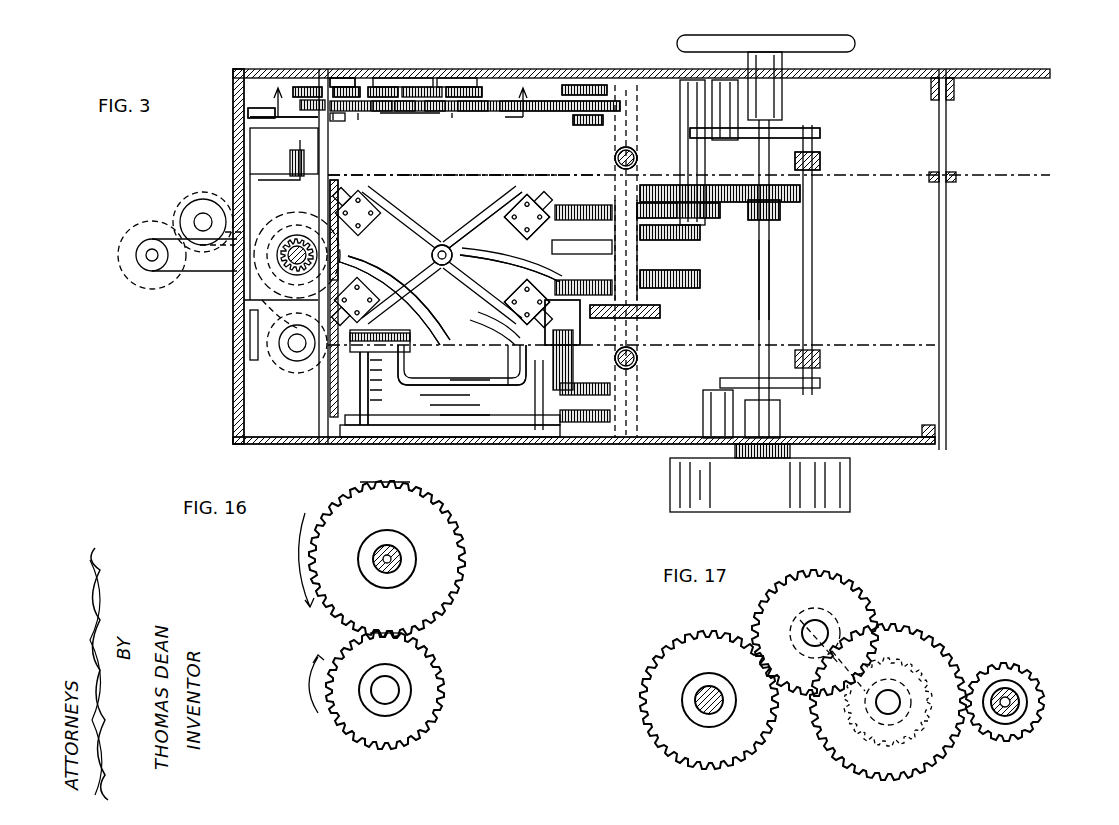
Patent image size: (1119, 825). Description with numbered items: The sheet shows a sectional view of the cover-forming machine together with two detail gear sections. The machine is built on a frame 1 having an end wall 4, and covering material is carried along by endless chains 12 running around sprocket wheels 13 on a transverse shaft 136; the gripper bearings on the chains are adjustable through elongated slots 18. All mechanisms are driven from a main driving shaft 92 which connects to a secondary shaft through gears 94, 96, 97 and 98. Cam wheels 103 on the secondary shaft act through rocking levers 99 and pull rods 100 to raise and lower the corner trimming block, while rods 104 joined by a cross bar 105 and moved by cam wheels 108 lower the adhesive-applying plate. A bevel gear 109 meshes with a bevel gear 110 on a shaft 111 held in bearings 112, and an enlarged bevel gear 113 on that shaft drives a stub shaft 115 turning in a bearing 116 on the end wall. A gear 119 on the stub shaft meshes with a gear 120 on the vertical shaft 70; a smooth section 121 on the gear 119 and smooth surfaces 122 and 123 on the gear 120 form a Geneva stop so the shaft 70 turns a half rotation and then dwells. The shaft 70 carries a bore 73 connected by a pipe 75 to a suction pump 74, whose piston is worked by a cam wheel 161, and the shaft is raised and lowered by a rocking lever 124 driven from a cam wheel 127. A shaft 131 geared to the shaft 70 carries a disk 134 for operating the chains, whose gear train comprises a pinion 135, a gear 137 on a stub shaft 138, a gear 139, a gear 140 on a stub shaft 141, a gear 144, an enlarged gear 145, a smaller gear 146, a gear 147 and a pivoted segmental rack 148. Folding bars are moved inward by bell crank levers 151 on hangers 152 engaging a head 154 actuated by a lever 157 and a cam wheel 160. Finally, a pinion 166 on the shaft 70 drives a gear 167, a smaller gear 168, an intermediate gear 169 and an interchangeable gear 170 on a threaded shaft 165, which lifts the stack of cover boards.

In FIG. 3, the frame 1 is at (562, 445).
In FIG. 3, the end wall 4 is at (235, 150).
In FIG. 3, the endless chains 12 is at (460, 172).
In FIG. 3, the sprocket wheels 13 is at (330, 172).
In FIG. 3, the elongated slots 18 is at (400, 98).
In FIG. 3, the shaft 70 is at (315, 250).
In FIG. 16, the shaft 70 is at (400, 553).
In FIG. 17, the shaft 70 is at (1018, 713).
In FIG. 3, the bore 73 is at (297, 250).
In FIG. 16, the bore 73 is at (382, 556).
In FIG. 17, the bore 73 is at (1015, 702).
In FIG. 3, the suction pump 74 is at (498, 325).
In FIG. 3, the pipe 75 is at (422, 320).
In FIG. 3, the main driving shaft 92 is at (770, 277).
In FIG. 3, the gear 94 is at (782, 210).
In FIG. 3, the gear 96 is at (720, 185).
In FIG. 3, the gear 97 is at (720, 218).
In FIG. 3, the gear 98 is at (650, 218).
In FIG. 3, the rocking levers 99 is at (790, 128).
In FIG. 3, the pull rods 100 is at (820, 160).
In FIG. 3, the cam wheels 103 is at (590, 125).
In FIG. 3, the rods 104 is at (638, 158).
In FIG. 3, the cross bar 105 is at (615, 233).
In FIG. 3, the cam wheels 108 is at (585, 85).
In FIG. 3, the bevel gear 109 is at (660, 312).
In FIG. 3, the bevel gear 110 is at (638, 358).
In FIG. 3, the shaft 111 is at (455, 348).
In FIG. 3, the bearings 112 is at (562, 330).
In FIG. 3, the enlarged bevel gear 113 is at (368, 404).
In FIG. 3, the stub shaft 115 is at (294, 346).
In FIG. 16, the stub shaft 115 is at (396, 682).
In FIG. 3, the bearing 116 is at (255, 355).
In FIG. 3, the gear 119 is at (292, 375).
In FIG. 16, the gear 119 is at (430, 691).
In FIG. 3, the gear 120 is at (268, 295).
In FIG. 16, the gear 120 is at (447, 560).
In FIG. 16, the smooth section 121 is at (335, 652).
In FIG. 3, the smooth surface 122 is at (285, 318).
In FIG. 16, the smooth surface 122 is at (383, 633).
In FIG. 3, the smooth surface 123 is at (300, 240).
In FIG. 16, the smooth surface 123 is at (387, 482).
In FIG. 3, the rocking lever 124 is at (390, 258).
In FIG. 3, the cam wheel 127 is at (688, 245).
In FIG. 3, the shaft 131 is at (320, 160).
In FIG. 3, the disk 134 is at (248, 118).
In FIG. 3, the pinion 135 is at (340, 86).
In FIG. 3, the shaft 136 is at (330, 195).
In FIG. 3, the gear 137 is at (352, 80).
In FIG. 3, the stub shaft 138 is at (343, 125).
In FIG. 3, the gear 139 is at (300, 86).
In FIG. 3, the gear 140 is at (405, 113).
In FIG. 3, the stub shaft 141 is at (382, 113).
In FIG. 3, the gear 144 is at (398, 86).
In FIG. 3, the enlarged gear 145 is at (470, 86).
In FIG. 3, the smaller gear 146 is at (433, 113).
In FIG. 3, the gear 147 is at (468, 113).
In FIG. 3, the segmental rack 148 is at (553, 111).
In FIG. 3, the bell crank levers 151 is at (474, 237).
In FIG. 3, the hangers 152 is at (530, 212).
In FIG. 3, the head 154 is at (444, 245).
In FIG. 3, the lever 157 is at (518, 270).
In FIG. 3, the cam wheel 160 is at (700, 278).
In FIG. 3, the cam wheel 161 is at (512, 388).
In FIG. 17, the threaded shaft 165 is at (696, 702).
In FIG. 17, the pinion 166 is at (1030, 681).
In FIG. 3, the gear 167 is at (212, 268).
In FIG. 17, the gear 167 is at (930, 646).
In FIG. 3, the smaller gear 168 is at (232, 275).
In FIG. 17, the smaller gear 168 is at (912, 725).
In FIG. 3, the intermediate gear 169 is at (200, 195).
In FIG. 17, the intermediate gear 169 is at (850, 598).
In FIG. 3, the interchangeable gear 170 is at (133, 222).
In FIG. 17, the interchangeable gear 170 is at (658, 677).